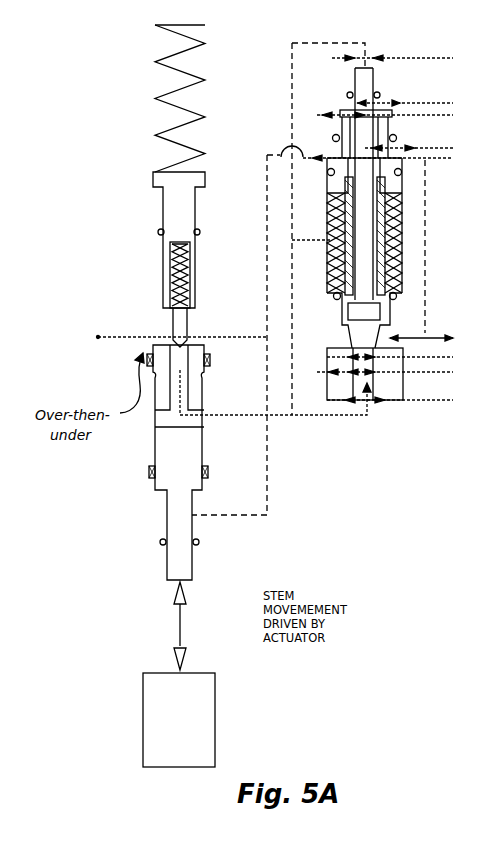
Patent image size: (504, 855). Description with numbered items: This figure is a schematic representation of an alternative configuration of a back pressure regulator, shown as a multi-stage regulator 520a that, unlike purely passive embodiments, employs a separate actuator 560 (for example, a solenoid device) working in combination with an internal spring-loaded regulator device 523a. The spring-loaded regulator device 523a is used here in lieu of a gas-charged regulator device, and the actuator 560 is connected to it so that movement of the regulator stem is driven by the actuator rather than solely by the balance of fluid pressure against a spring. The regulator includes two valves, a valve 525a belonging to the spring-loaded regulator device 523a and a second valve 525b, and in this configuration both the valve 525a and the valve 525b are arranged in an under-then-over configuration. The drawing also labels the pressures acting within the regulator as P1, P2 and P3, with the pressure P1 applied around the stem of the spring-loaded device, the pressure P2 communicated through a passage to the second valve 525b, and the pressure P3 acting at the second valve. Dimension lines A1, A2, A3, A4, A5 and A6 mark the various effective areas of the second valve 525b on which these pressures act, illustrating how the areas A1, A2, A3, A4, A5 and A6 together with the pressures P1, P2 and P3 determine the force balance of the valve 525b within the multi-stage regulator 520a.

The multi-stage regulator 520a is at (130, 118).
The valve 525a is at (142, 320).
The spring-loaded regulator device 523a is at (115, 460).
The valve 525b is at (400, 328).
The actuator 560 is at (143, 715).
The first pressure P1 is at (98, 337).
The second pressure P2 is at (295, 417).
The third pressure P3 is at (423, 338).
The area A1 is at (399, 400).
The area A2 is at (402, 59).
The area A3 is at (387, 265).
The area A4 is at (394, 115).
The area A5 is at (418, 148).
The area A6 is at (414, 103).